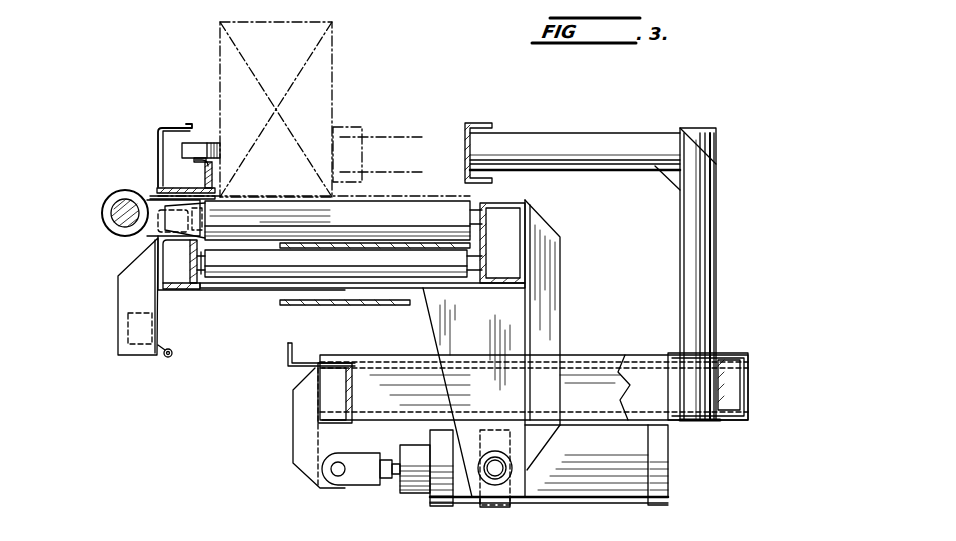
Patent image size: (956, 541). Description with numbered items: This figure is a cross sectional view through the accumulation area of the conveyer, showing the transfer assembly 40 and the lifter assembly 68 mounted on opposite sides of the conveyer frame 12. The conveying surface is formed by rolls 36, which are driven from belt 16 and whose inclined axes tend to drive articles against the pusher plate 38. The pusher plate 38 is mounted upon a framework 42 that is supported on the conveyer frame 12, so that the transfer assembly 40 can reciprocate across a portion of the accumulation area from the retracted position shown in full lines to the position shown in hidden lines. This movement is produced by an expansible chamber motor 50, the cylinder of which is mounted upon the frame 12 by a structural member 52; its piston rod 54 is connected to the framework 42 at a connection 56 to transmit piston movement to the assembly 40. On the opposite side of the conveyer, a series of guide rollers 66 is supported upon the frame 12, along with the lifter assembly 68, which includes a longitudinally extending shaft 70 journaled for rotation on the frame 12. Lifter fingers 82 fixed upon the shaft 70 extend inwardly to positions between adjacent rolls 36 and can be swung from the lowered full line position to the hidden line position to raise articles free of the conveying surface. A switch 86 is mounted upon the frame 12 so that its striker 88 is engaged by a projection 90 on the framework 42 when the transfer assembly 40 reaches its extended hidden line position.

The conveyer frame 12 is at (190, 252).
The belt 16 is at (283, 249).
The rolls 36 is at (432, 218).
The pusher plate 38 is at (463, 132).
The transfer assembly 40 is at (740, 161).
The framework 42 is at (641, 170).
The expansible chamber motor 50 is at (592, 500).
The structural member 52 is at (561, 336).
The piston rod 54 is at (395, 478).
The connection 56 is at (337, 478).
The guide rollers 66 is at (220, 149).
The lifter assembly 68 is at (100, 216).
The shaft 70 is at (124, 192).
The lifter fingers 82 is at (318, 222).
The switch 86 is at (134, 358).
The striker 88 is at (172, 353).
The projection 90 is at (287, 354).